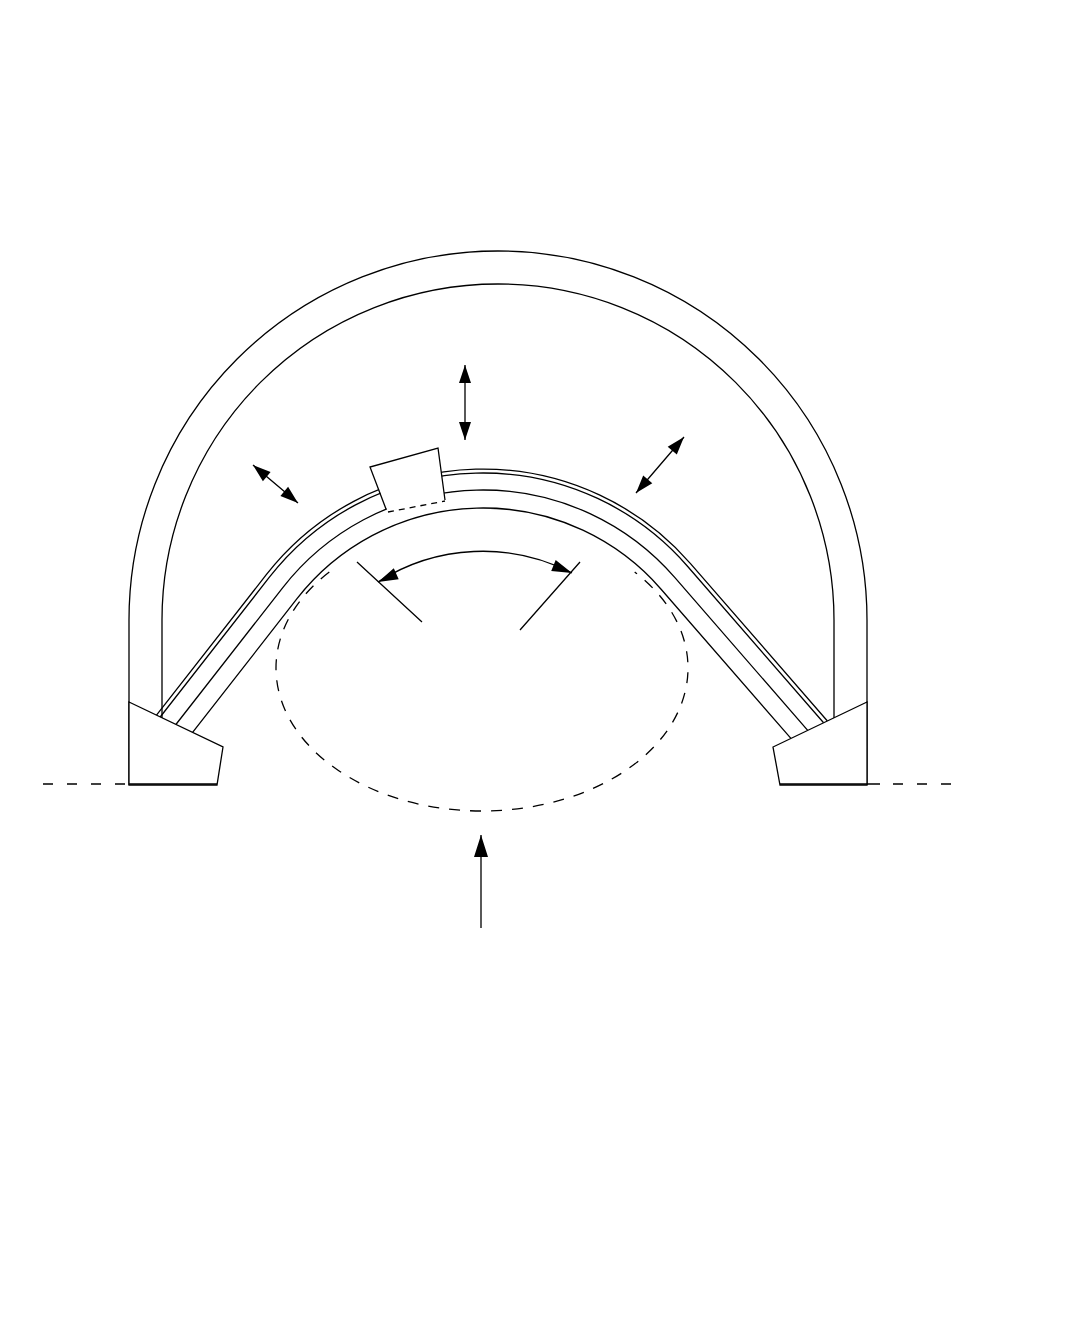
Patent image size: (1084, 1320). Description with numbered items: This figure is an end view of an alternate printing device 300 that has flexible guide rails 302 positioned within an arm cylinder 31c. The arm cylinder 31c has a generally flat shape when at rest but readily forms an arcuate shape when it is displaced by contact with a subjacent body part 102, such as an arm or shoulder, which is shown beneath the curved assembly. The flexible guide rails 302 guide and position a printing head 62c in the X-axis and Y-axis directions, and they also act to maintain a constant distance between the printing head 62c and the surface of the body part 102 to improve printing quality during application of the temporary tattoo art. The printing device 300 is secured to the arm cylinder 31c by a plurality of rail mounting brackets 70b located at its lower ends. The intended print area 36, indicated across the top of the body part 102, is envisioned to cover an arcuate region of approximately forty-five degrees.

The printing device 300 is at (228, 172).
The arm cylinder 31c is at (667, 308).
The flexible guide rails 302 is at (713, 582).
The printing head 62c is at (392, 460).
The body part 102 is at (355, 780).
The print area 36 is at (468, 577).
The rail mounting brackets 70b is at (167, 758).